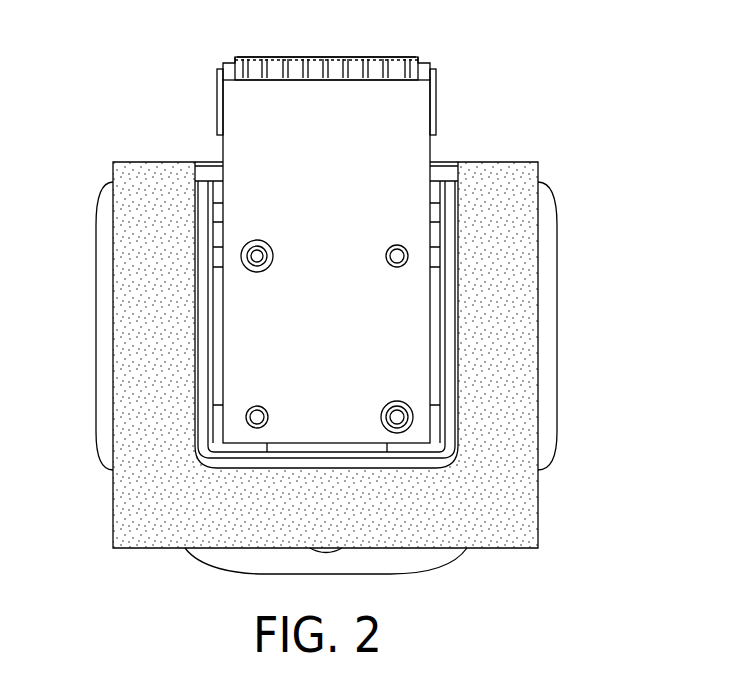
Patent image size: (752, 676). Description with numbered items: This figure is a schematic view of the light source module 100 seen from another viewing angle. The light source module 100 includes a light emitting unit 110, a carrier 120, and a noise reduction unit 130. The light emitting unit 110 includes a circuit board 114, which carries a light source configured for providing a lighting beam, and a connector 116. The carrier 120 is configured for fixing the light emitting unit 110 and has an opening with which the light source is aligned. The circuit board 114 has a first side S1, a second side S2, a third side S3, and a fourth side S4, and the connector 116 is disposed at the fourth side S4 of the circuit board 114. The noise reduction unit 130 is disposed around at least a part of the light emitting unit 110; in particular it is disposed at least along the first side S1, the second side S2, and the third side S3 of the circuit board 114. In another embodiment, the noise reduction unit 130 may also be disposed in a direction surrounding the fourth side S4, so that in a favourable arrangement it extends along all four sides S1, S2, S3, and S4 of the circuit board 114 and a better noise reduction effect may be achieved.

The light source module 100 is at (335, 314).
The light emitting unit 110 is at (376, 225).
The circuit board 114 is at (417, 108).
The connector 116 is at (433, 68).
The carrier 120 is at (548, 343).
The noise reduction unit 130 is at (513, 388).
The first side S1 is at (211, 325).
The second side S2 is at (397, 454).
The third side S3 is at (432, 318).
The fourth side S4 is at (277, 76).